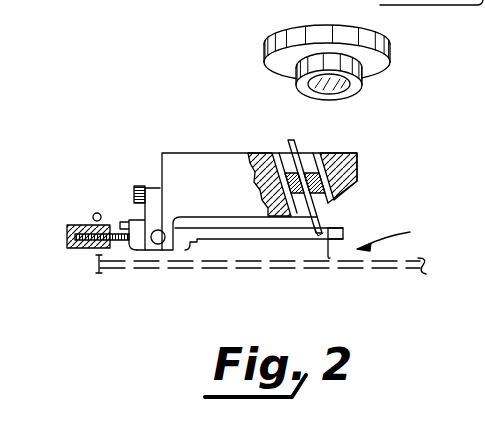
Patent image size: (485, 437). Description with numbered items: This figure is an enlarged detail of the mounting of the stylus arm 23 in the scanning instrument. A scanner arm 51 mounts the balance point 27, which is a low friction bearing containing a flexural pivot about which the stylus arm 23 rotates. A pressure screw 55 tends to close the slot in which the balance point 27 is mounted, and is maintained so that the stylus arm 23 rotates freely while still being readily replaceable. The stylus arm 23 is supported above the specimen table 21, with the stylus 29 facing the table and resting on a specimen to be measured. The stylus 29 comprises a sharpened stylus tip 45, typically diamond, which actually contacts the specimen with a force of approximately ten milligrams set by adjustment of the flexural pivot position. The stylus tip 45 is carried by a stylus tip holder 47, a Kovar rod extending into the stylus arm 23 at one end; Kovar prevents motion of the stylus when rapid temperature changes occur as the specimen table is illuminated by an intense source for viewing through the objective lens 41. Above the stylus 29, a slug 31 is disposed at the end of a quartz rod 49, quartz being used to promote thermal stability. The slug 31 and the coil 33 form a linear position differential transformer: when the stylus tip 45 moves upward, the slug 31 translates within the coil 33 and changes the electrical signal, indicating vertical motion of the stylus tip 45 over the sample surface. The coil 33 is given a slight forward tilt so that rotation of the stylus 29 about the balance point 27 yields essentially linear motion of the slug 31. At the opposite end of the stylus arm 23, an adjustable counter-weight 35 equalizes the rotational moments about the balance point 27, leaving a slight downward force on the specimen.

The specimen table 21 is at (389, 270).
The stylus arm 23 is at (208, 230).
The balance point 27 is at (157, 244).
The stylus 29 is at (398, 235).
The slug 31 is at (287, 141).
The coil 33 is at (320, 153).
The adjustable counter-weight 35 is at (80, 225).
The objective lens 41 is at (391, 60).
The stylus tip 45 is at (327, 262).
The stylus tip holder 47 is at (325, 243).
The quartz rod 49 is at (308, 218).
The scanner arm 51 is at (203, 160).
The pressure screw 55 is at (134, 190).